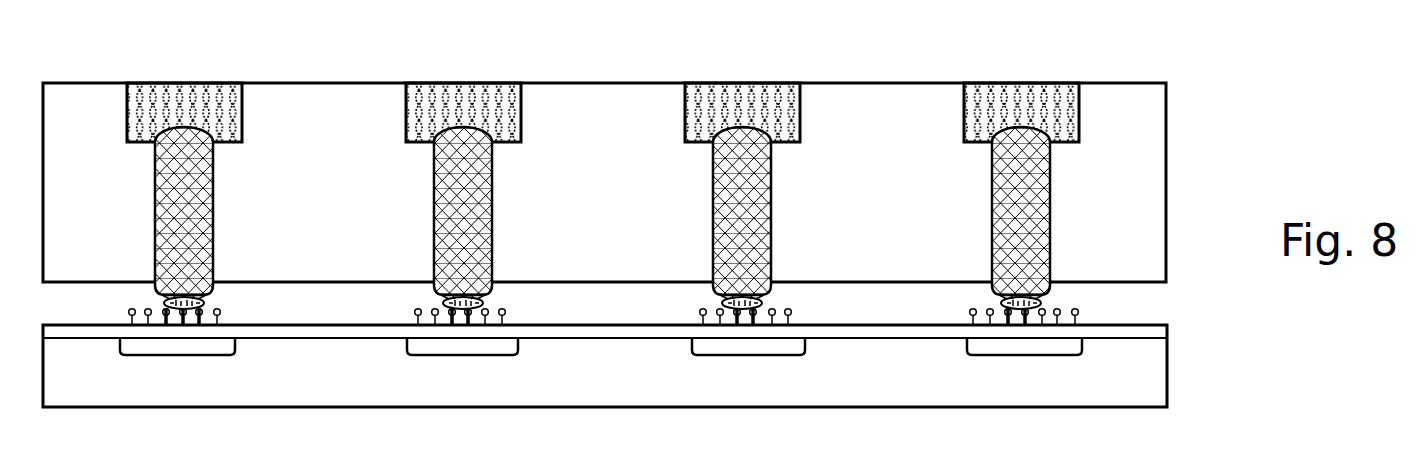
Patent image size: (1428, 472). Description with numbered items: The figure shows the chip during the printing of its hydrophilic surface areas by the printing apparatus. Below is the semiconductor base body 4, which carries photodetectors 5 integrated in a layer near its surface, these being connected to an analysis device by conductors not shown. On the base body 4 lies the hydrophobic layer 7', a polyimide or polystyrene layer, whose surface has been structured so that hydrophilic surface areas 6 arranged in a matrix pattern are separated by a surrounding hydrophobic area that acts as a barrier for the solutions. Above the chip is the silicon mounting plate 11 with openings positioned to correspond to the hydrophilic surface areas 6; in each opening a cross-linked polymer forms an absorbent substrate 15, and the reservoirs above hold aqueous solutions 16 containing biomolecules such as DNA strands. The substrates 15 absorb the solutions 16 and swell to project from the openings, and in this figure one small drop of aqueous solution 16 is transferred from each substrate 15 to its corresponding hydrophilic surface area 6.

The base body 4 is at (887, 395).
The photodetectors 5 is at (180, 348).
The hydrophilic surface areas 6 is at (227, 304).
The hydrophobic layer 7' is at (631, 334).
The mounting plate 11 is at (1153, 197).
The absorbent substrate 15 is at (155, 212).
The aqueous solutions 16 is at (185, 83).